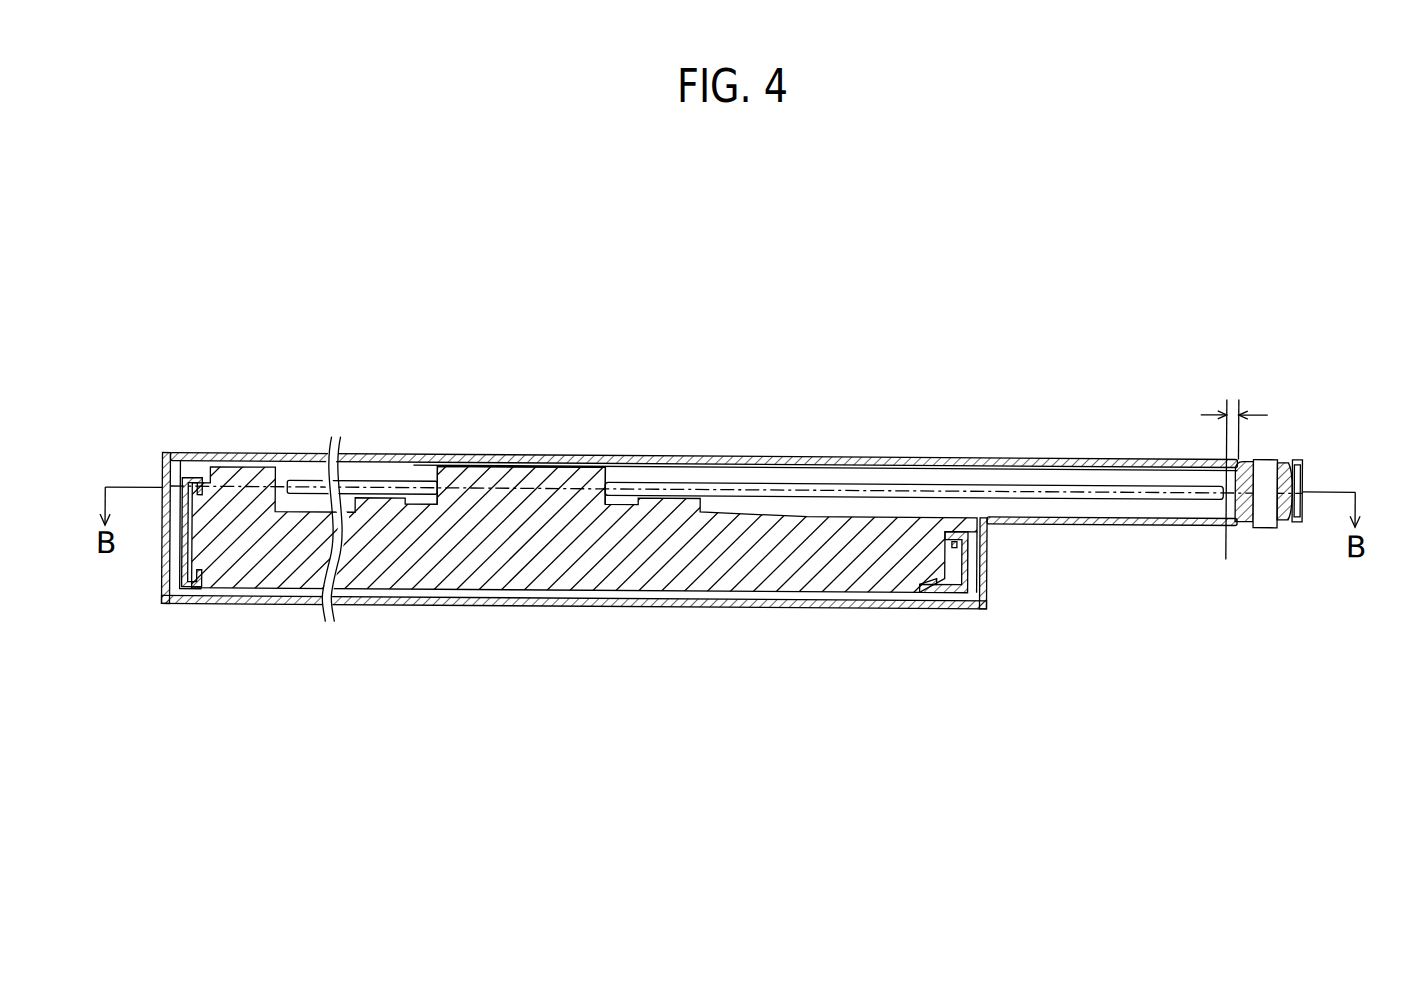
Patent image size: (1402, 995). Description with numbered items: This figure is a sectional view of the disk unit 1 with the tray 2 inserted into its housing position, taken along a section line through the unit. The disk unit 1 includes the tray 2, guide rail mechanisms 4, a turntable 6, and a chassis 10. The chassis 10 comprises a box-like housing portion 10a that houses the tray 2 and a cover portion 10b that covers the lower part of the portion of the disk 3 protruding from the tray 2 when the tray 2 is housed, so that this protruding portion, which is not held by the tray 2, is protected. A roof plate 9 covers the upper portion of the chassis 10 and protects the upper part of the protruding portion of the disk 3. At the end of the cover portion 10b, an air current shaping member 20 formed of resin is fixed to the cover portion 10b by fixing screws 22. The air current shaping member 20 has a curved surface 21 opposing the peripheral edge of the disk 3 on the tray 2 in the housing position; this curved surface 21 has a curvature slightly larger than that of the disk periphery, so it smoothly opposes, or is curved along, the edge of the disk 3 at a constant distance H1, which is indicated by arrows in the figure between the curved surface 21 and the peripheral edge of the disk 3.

The disk unit 1 is at (978, 303).
The tray 2 is at (523, 574).
The disk 3 is at (1018, 485).
The guide rail mechanisms 4 is at (180, 536).
The turntable 6 is at (520, 470).
The roof plate 9 is at (863, 462).
The chassis 10 is at (793, 607).
The housing portion 10a is at (777, 472).
The cover portion 10b is at (1122, 523).
The air current shaping member 20 is at (1237, 502).
The curved surface 21 is at (1232, 456).
The fixing screws 22 is at (1263, 459).
The constant distance H1 is at (1231, 408).